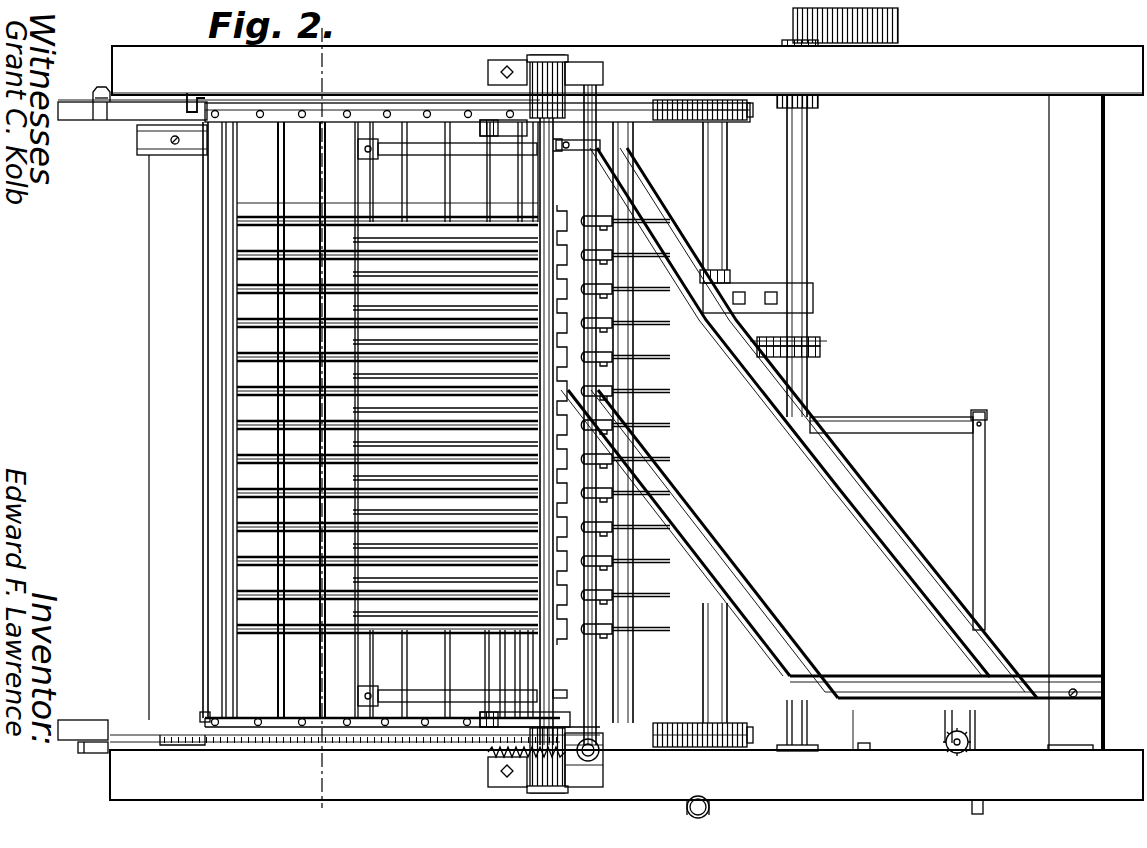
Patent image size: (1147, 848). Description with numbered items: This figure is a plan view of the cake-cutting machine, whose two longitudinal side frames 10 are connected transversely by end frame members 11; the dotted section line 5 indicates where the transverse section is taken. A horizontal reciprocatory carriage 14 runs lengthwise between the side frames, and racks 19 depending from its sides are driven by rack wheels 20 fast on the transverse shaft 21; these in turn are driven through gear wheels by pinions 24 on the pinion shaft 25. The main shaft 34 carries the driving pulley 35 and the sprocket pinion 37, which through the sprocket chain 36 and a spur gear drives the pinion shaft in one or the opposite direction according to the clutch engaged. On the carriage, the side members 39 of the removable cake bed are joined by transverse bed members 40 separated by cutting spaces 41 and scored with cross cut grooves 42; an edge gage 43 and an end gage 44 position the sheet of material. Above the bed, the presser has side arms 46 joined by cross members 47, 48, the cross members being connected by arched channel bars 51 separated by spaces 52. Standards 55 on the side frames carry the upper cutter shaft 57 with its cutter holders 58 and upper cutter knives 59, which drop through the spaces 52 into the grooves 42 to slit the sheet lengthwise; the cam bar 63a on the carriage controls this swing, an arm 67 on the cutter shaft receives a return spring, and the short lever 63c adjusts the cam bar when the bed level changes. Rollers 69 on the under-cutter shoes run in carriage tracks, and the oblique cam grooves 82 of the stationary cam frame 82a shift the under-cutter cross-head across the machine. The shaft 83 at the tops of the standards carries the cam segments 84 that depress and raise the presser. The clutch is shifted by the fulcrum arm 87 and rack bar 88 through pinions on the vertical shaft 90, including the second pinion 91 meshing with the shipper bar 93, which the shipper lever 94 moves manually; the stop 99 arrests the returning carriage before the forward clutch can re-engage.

The section line 5— 5 is at (322, 30).
The side frames 10 is at (978, 57).
The end frame members 11 is at (155, 365).
The reciprocatory carriage 14 is at (210, 160).
The racks 19 is at (76, 100).
The rack wheels 20 is at (666, 112).
The transverse shaft 21 is at (628, 650).
The pinions 24 is at (745, 116).
The pinion shaft 25 is at (726, 206).
The main shaft 34 is at (800, 162).
The driving pulley 35 is at (900, 22).
The sprocket chain 36 is at (822, 354).
The sprocket pinion 37 is at (822, 339).
The side members of cake bed 39 is at (252, 112).
The transverse bed members 40 is at (245, 375).
The cutting spaces 41 is at (280, 262).
The cross cut grooves 42 is at (255, 297).
The edge gage 43 is at (230, 443).
The end gage 44 is at (240, 205).
The side arms 46 is at (425, 150).
The cross member 47 is at (527, 680).
The cross member 48 is at (360, 650).
The channel bars 51 is at (355, 572).
The spaces 52 is at (380, 392).
The standards 55 is at (565, 60).
The upper cutter shaft 57 is at (598, 172).
The cutter holders 58 is at (610, 293).
The upper cutter knives 59 is at (668, 362).
The cam bar 63a is at (365, 738).
The short lever 63c is at (205, 717).
The arm 67 is at (600, 760).
The rollers 69 is at (495, 756).
The cam grooves 82 is at (680, 553).
The stationary cam frame 82a is at (740, 598).
The shaft 83 is at (547, 194).
The cam segments 84 is at (490, 120).
The fulcrum arm 87 is at (925, 420).
The rack bar 88 is at (983, 487).
The vertical shaft 90 is at (972, 733).
The second pinion 91 is at (945, 736).
The shipper bar 93 is at (95, 752).
The shipper lever 94 is at (712, 798).
The stop 99 is at (197, 97).